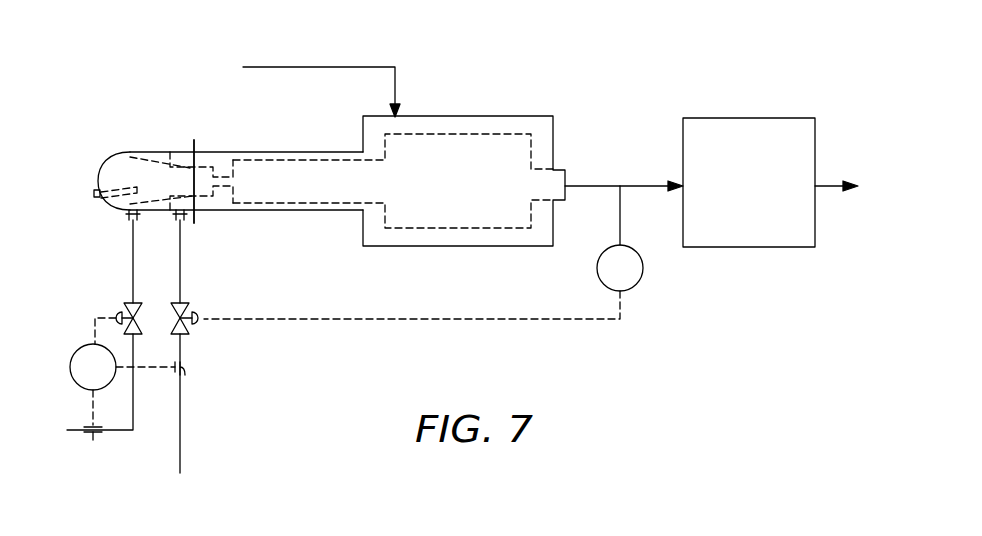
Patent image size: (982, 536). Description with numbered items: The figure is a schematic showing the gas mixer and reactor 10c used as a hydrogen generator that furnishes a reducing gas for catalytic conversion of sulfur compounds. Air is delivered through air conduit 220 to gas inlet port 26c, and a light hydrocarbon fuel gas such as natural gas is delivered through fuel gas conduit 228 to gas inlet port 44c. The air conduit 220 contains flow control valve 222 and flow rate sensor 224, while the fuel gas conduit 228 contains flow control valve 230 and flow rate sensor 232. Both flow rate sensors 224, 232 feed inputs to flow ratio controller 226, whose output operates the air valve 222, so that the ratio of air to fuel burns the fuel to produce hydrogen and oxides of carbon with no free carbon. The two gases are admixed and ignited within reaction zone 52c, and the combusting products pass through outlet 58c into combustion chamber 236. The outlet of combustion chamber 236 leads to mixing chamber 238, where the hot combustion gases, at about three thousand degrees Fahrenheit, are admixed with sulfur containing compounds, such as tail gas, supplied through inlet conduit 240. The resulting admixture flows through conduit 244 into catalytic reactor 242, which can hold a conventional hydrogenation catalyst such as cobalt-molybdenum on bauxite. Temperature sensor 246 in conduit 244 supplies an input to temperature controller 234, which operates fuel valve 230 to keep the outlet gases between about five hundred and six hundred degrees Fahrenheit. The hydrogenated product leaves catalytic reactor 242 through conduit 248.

The gas mixer and reactor 10c is at (88, 170).
The gas inlet port 26c is at (125, 222).
The gas inlet port 44c is at (194, 224).
The reaction zone 52c is at (202, 178).
The outlet 58c is at (241, 184).
The air conduit 220 is at (132, 266).
The flow control valve 222 is at (128, 306).
The flow rate sensor 224 is at (77, 401).
The flow ratio controller 226 is at (78, 348).
The fuel gas conduit 228 is at (182, 278).
The flow control valve 230 is at (192, 316).
The flow rate sensor 232 is at (186, 374).
The temperature controller 234 is at (638, 281).
The combustion chamber 236 is at (309, 183).
The mixing chamber 238 is at (480, 151).
The inlet conduit 240 is at (329, 66).
The catalytic reactor 242 is at (766, 117).
The conduit 244 is at (592, 185).
The temperature sensor 246 is at (622, 222).
The conduit 248 is at (838, 174).